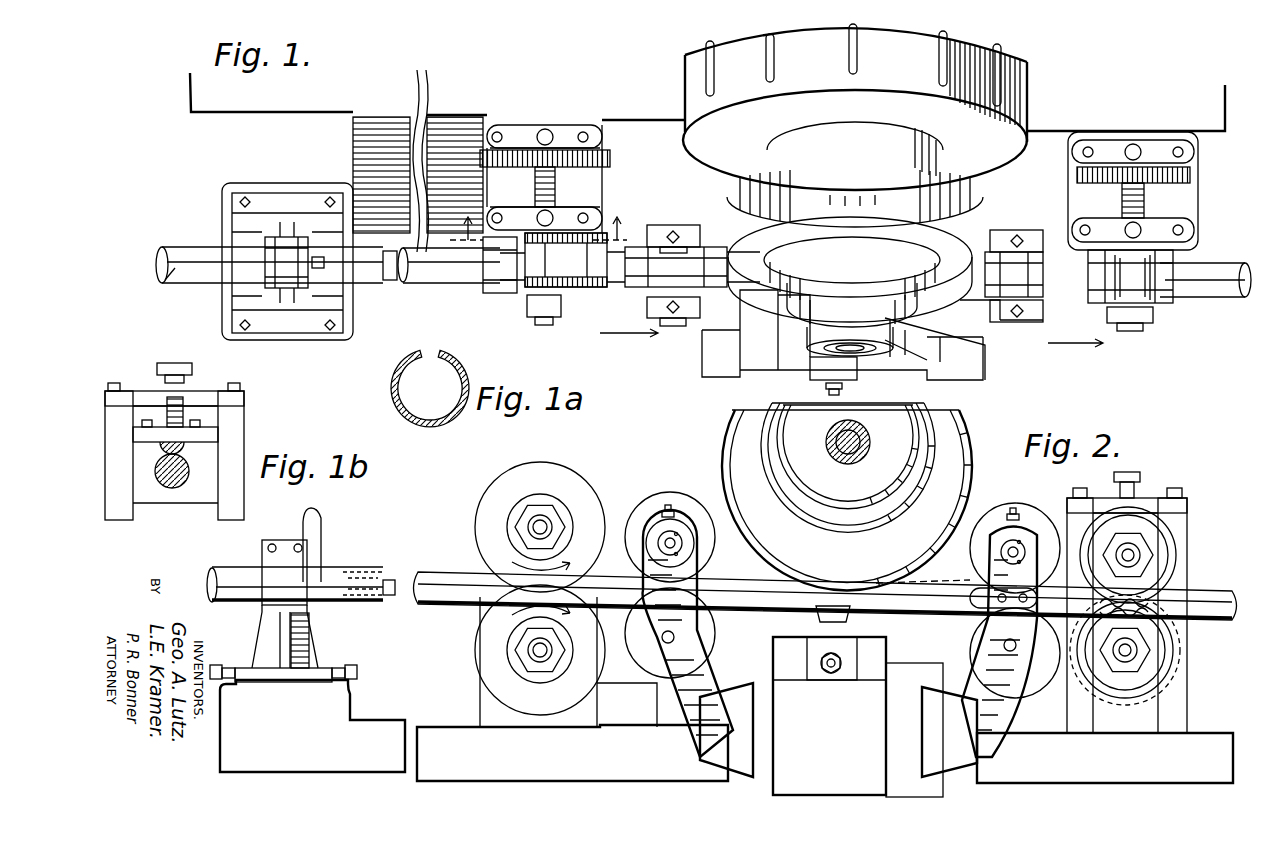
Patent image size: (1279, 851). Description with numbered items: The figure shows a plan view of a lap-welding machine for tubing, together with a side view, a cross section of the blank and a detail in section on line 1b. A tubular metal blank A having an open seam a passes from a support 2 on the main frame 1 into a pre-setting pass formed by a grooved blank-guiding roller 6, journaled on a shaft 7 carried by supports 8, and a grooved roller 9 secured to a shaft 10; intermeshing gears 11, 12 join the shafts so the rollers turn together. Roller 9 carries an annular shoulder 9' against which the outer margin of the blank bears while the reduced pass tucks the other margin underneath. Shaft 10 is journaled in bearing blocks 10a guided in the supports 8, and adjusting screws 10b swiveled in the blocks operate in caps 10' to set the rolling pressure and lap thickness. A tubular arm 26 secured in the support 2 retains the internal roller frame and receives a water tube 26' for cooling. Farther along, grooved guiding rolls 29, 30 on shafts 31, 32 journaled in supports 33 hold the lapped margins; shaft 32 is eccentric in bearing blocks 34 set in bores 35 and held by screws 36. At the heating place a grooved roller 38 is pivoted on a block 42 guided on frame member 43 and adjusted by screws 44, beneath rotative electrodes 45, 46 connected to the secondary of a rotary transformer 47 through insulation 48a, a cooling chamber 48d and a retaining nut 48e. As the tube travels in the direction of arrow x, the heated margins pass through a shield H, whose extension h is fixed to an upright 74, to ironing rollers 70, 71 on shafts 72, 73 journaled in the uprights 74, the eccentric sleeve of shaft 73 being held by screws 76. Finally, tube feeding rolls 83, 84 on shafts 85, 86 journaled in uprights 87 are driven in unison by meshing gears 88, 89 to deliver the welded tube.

In FIG. 2, the main frame 1 is at (240, 760).
In FIG. 1, the support 2 is at (278, 290).
In FIG. 2, the support 2 is at (265, 548).
In FIG. 1, the grooved blank-guiding roller 6 is at (448, 247).
In FIG. 2, the grooved blank-guiding roller 6 is at (487, 658).
In FIG. 2, the shaft 7 is at (540, 658).
In FIG. 1, the supports 8 is at (500, 125).
In FIG. 1B, the supports 8 is at (244, 420).
In FIG. 2, the supports 8 is at (480, 700).
In FIG. 1, the grooved roller 9 is at (566, 280).
In FIG. 1, the annular shoulder 9' is at (502, 224).
In FIG. 1, the shaft 10 is at (802, 293).
In FIG. 1B, the shaft 10 is at (178, 493).
In FIG. 1, the caps 10' is at (798, 179).
In FIG. 1B, the caps 10' is at (168, 376).
In FIG. 2, the caps 10' is at (1135, 484).
In FIG. 1B, the bearing blocks 10a is at (143, 495).
In FIG. 1, the adjusting screws 10b is at (545, 128).
In FIG. 1B, the adjusting screws 10b is at (192, 372).
In FIG. 2, the adjusting screws 10b is at (1114, 478).
In FIG. 2, the gear 11 is at (475, 644).
In FIG. 1, the gear 12 is at (612, 158).
In FIG. 2, the gear 12 is at (510, 470).
In FIG. 1, the arm 26 is at (388, 287).
In FIG. 2, the arm 26 is at (376, 605).
In FIG. 1, the tube 26' is at (310, 211).
In FIG. 2, the tube 26' is at (330, 545).
In FIG. 2, the guiding roll 29 is at (645, 667).
In FIG. 2, the guiding roll 30 is at (642, 518).
In FIG. 2, the shaft 31 is at (700, 622).
In FIG. 1, the shaft 32 is at (672, 320).
In FIG. 2, the shaft 32 is at (688, 546).
In FIG. 1, the supports 33 is at (655, 225).
In FIG. 2, the supports 33 is at (670, 642).
In FIG. 2, the bearing blocks 34 is at (678, 532).
In FIG. 2, the bores 35 is at (674, 522).
In FIG. 2, the screws 36 is at (665, 506).
In FIG. 2, the grooved roller 38 is at (810, 612).
In FIG. 2, the block 42 is at (808, 668).
In FIG. 2, the frame member 43 is at (838, 717).
In FIG. 1, the screws 44 is at (840, 388).
In FIG. 2, the screws 44 is at (831, 675).
In FIG. 1, the rotative electrode 45 is at (945, 190).
In FIG. 2, the rotative electrode 45 is at (975, 505).
In FIG. 1, the rotative electrode 46 is at (876, 289).
In FIG. 2, the rotative electrode 46 is at (933, 490).
In FIG. 1, the transformer 47 is at (1030, 96).
In FIG. 1, the insulation 48a is at (768, 205).
In FIG. 1, the cooling chamber 48d is at (850, 269).
In FIG. 2, the cooling chamber 48d is at (775, 482).
In FIG. 2, the nut 48e is at (848, 457).
In FIG. 2, the grooved roller 70 is at (1022, 515).
In FIG. 1, the grooved roller 71 is at (995, 340).
In FIG. 2, the grooved roller 71 is at (1030, 530).
In FIG. 2, the shaft 72 is at (1004, 645).
In FIG. 1, the shaft 73 is at (1020, 328).
In FIG. 2, the shaft 73 is at (1016, 563).
In FIG. 1, the uprights 74 is at (985, 232).
In FIG. 2, the uprights 74 is at (988, 744).
In FIG. 1, the screws 76 is at (1030, 235).
In FIG. 2, the tube feeding roll 83 is at (1160, 665).
In FIG. 1, the tube feeding roll 84 is at (1160, 310).
In FIG. 2, the tube feeding roll 84 is at (1165, 542).
In FIG. 2, the shaft 85 is at (1140, 650).
In FIG. 1, the shaft 86 is at (1145, 200).
In FIG. 2, the shaft 86 is at (1142, 555).
In FIG. 1, the uprights 87 is at (1195, 162).
In FIG. 2, the uprights 87 is at (1183, 504).
In FIG. 1, the gear 88 is at (1077, 174).
In FIG. 2, the gear 88 is at (1150, 590).
In FIG. 2, the gear 89 is at (1150, 606).
In FIG. 1, the tubular metal blank A is at (182, 248).
In FIG. 1A, the tubular metal blank A is at (430, 427).
In FIG. 2, the tubular metal blank A is at (384, 572).
In FIG. 1, the open seam a is at (170, 283).
In FIG. 1A, the open seam a is at (428, 352).
In FIG. 1, the shield H is at (980, 313).
In FIG. 2, the shield H is at (923, 593).
In FIG. 2, the extension h is at (1003, 598).
In FIG. 1, the arrow x is at (629, 343).
In FIG. 1, the section line 1b is at (541, 216).